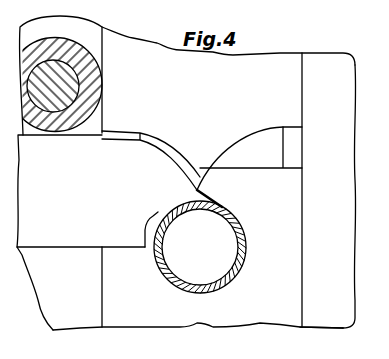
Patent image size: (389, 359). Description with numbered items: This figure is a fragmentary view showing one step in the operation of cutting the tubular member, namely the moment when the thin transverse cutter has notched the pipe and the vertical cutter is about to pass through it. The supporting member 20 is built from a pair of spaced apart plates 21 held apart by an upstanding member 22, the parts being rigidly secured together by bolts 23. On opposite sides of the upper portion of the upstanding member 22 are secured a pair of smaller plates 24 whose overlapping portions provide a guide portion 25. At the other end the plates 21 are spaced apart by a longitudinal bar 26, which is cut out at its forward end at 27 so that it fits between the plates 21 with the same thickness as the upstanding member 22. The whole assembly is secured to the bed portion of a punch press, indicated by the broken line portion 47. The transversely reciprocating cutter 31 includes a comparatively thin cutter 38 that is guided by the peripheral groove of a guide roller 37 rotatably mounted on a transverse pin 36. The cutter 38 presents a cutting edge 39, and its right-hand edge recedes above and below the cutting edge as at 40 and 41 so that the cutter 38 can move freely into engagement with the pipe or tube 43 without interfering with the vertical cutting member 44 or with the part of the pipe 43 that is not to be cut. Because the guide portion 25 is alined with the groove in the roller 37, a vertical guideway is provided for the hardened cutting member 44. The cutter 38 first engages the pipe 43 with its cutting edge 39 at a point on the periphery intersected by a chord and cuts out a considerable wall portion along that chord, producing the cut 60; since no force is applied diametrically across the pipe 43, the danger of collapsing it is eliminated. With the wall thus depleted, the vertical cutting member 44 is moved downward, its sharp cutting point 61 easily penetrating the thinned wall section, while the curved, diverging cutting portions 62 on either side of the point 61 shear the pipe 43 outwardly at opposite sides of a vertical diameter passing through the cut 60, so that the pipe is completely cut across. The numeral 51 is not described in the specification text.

The supporting member 20 is at (192, 320).
The plates 21 is at (247, 321).
The upstanding member 22 is at (348, 203).
The bolts 23 is at (383, 245).
The smaller plates 24 is at (293, 157).
The guide portion 25 is at (293, 137).
The longitudinal bar 26 is at (55, 333).
The forward end cut-out 27 is at (92, 313).
The transversely reciprocating cutter 31 is at (42, 248).
The transverse pin 36 is at (72, 91).
The guide roller 37 is at (82, 32).
The cutter 38 is at (83, 240).
The cutting edge 39 is at (222, 207).
The upper receding portion 40 is at (178, 160).
The lower receding portion 41 is at (154, 236).
The pipe or tube 43 is at (200, 292).
The vertical cutting member 44 is at (290, 59).
The bed portion 47 is at (50, 5).
The lever 51 is at (176, 0).
The cut 60 is at (200, 195).
The cutting point 61 is at (195, 187).
The diverging cutting portions 62 is at (140, 135).